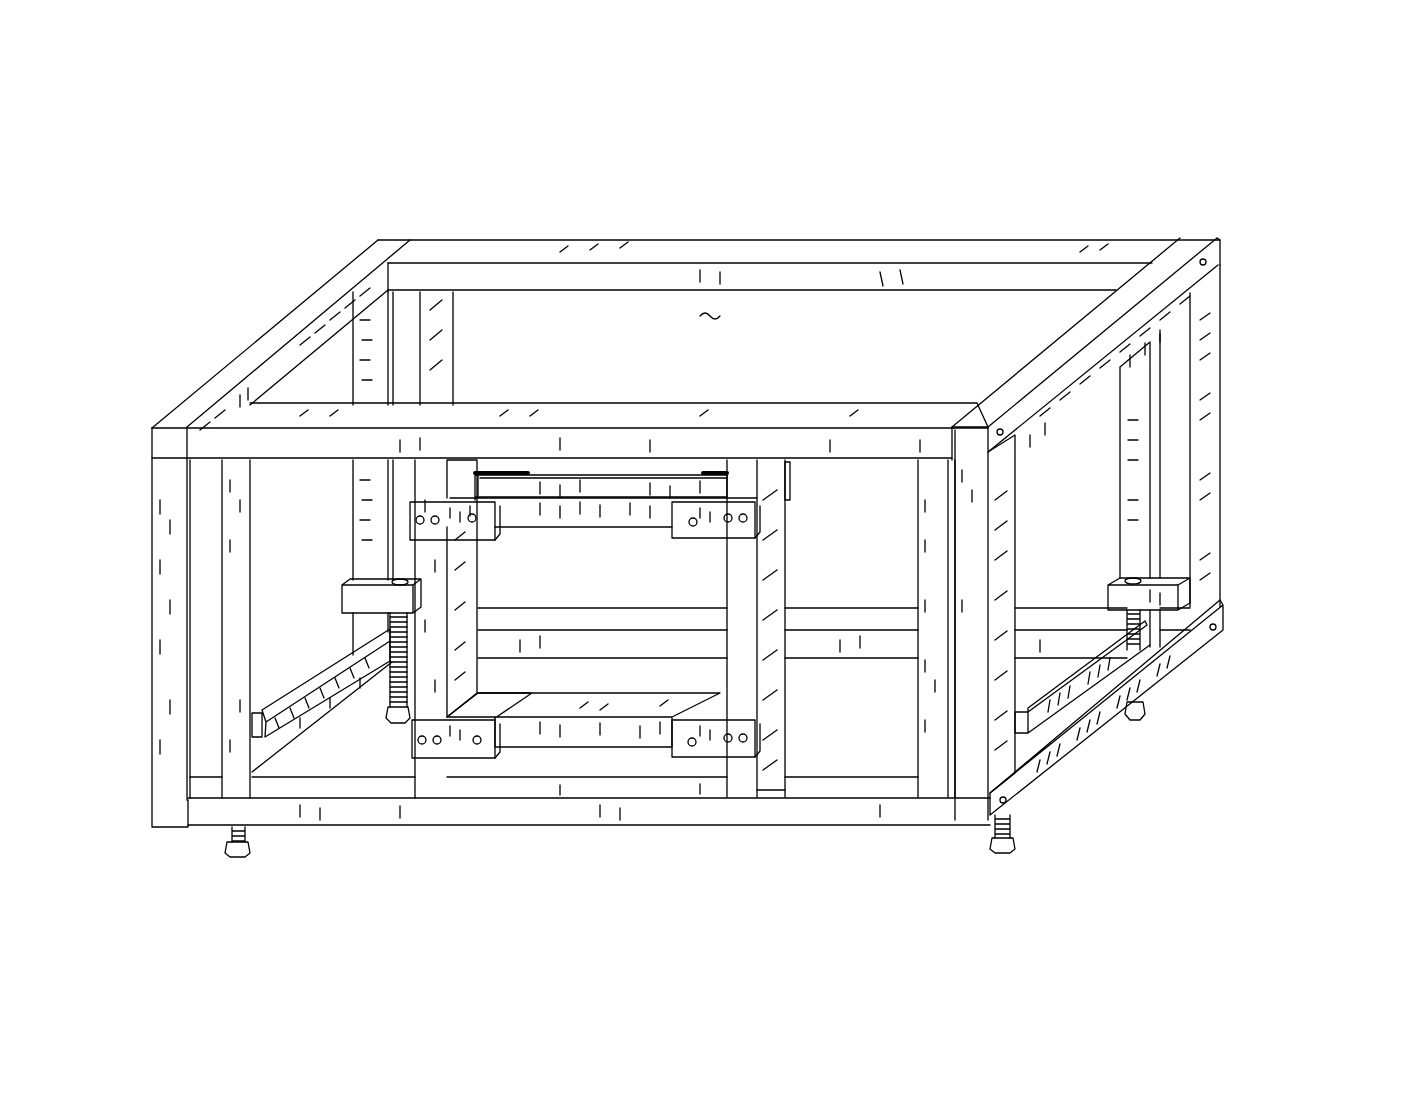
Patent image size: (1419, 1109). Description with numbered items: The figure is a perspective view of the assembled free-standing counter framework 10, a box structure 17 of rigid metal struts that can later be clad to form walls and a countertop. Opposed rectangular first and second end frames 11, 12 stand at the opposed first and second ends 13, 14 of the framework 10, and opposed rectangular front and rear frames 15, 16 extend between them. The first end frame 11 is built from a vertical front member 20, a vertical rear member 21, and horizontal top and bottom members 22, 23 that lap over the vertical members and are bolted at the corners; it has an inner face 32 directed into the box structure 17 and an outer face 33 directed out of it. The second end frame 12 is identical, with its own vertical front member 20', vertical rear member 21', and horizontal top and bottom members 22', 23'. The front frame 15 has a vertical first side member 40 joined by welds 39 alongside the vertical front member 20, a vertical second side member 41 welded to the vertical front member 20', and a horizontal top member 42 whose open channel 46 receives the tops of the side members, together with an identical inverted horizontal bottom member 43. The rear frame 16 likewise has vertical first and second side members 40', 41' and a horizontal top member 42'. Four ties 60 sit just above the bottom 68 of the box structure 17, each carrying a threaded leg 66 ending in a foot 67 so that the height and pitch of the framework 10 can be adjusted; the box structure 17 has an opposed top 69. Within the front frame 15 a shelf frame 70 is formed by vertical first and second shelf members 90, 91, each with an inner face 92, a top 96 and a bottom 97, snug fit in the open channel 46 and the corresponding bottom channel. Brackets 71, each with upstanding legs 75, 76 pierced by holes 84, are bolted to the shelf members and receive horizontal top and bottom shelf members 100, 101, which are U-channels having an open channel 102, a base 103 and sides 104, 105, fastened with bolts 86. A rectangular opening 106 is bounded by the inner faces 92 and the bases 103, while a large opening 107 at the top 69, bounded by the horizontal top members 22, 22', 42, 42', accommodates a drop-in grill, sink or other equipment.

The free-standing counter framework 10 is at (1260, 164).
The first end frame 11 is at (308, 216).
The second end frame 12 is at (1214, 224).
The first end 13 is at (416, 196).
The second end 14 is at (1180, 162).
The front frame 15 is at (860, 836).
The rear frame 16 is at (1080, 238).
The box structure 17 is at (1234, 650).
The vertical front member 20 is at (150, 627).
The vertical front member 20' is at (1013, 623).
The vertical rear member 21 is at (385, 473).
The vertical rear member 21' is at (1239, 436).
The horizontal top member 22 is at (298, 335).
The horizontal top member 22' is at (1086, 345).
The horizontal bottom member 23 is at (322, 717).
The horizontal bottom member 23' is at (1106, 707).
The inner face 32 is at (315, 333).
The outer face 33 is at (312, 300).
The welds 39 is at (1165, 405).
The vertical first side member 40 is at (263, 629).
The vertical first side member 40' is at (363, 643).
The vertical second side member 41 is at (911, 628).
The vertical second side member 41' is at (1204, 460).
The horizontal top member 42 is at (570, 404).
The horizontal top member 42' is at (799, 243).
The horizontal bottom member 43 is at (572, 825).
The open channel 46 is at (884, 474).
The tie 60 is at (1204, 596).
The leg 66 is at (1127, 642).
The foot 67 is at (250, 848).
The bottom 68 is at (1262, 628).
The top 69 is at (1252, 262).
The shelf frame 70 is at (816, 518).
The bracket 71 is at (490, 540).
The leg 75 is at (480, 475).
The leg 76 is at (515, 470).
The holes 84 is at (412, 760).
The bolts 86 is at (478, 760).
The vertical first shelf member 90 is at (470, 615).
The vertical second shelf member 91 is at (780, 590).
The inner face 92 is at (470, 689).
The top 96 is at (792, 468).
The bottom 97 is at (770, 787).
The horizontal top shelf member 100 is at (715, 468).
The horizontal bottom shelf member 101 is at (670, 762).
The open channel 102 is at (610, 484).
The base 103 is at (583, 689).
The side 104 is at (580, 523).
The side 105 is at (630, 485).
The rectangular opening 106 is at (650, 600).
The opening 107 is at (700, 310).